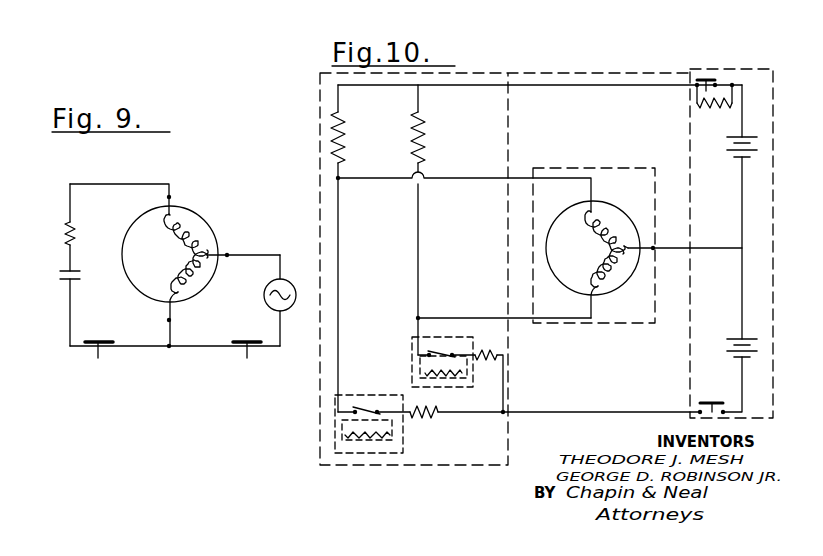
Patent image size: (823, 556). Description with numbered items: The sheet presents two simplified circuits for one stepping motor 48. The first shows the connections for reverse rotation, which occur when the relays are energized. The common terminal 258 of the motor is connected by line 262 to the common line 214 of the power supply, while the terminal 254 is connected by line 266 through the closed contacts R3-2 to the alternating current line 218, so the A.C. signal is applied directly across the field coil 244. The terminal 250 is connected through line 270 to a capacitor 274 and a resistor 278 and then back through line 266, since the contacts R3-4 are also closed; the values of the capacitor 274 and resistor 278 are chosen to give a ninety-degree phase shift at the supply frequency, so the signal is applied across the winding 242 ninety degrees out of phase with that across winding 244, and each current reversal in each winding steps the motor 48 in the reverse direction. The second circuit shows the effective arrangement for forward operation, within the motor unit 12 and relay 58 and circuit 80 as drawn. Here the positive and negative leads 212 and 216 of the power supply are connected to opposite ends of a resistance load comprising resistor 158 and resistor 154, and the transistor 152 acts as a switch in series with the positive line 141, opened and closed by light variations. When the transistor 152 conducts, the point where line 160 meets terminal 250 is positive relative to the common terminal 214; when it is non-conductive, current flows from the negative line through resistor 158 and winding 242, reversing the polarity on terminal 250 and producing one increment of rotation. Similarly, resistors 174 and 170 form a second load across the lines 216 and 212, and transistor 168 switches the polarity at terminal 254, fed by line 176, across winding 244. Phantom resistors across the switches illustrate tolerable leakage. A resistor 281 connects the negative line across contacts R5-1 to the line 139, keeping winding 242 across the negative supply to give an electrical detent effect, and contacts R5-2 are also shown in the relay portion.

In FIG. 10, the motor unit 12 is at (587, 166).
In FIG. 9, the stepping motor 48 is at (133, 285).
In FIG. 10, the stepping motor 48 is at (626, 214).
In FIG. 10, the relay 58 is at (689, 69).
In FIG. 10, the control circuit 80 is at (508, 73).
In FIG. 10, the line 139 is at (467, 73).
In FIG. 10, the positive line 141 is at (528, 413).
In FIG. 10, the transistor 152 is at (375, 402).
In FIG. 10, the resistor 154 is at (438, 416).
In FIG. 10, the resistor 158 is at (347, 121).
In FIG. 10, the line 160 is at (515, 178).
In FIG. 10, the transistor 168 is at (444, 341).
In FIG. 10, the resistor 170 is at (490, 349).
In FIG. 10, the resistor 174 is at (425, 141).
In FIG. 10, the line 176 is at (523, 319).
In FIG. 10, the positive lead 212 is at (732, 407).
In FIG. 9, the common line 214 is at (258, 255).
In FIG. 10, the common line 214 is at (699, 248).
In FIG. 10, the negative lead 216 is at (723, 84).
In FIG. 9, the alternating current line 218 is at (280, 323).
In FIG. 9, the winding 242 is at (196, 227).
In FIG. 10, the winding 242 is at (618, 232).
In FIG. 9, the winding 244 is at (205, 278).
In FIG. 10, the winding 244 is at (609, 288).
In FIG. 9, the terminal 250 is at (169, 197).
In FIG. 10, the terminal 250 is at (592, 182).
In FIG. 9, the terminal 254 is at (172, 320).
In FIG. 10, the terminal 254 is at (597, 323).
In FIG. 9, the common terminal 258 is at (227, 255).
In FIG. 10, the line 262 is at (653, 247).
In FIG. 9, the line 266 is at (190, 347).
In FIG. 9, the line 270 is at (130, 184).
In FIG. 9, the capacitor 274 is at (74, 270).
In FIG. 9, the resistor 278 is at (74, 228).
In FIG. 10, the resistor 281 is at (733, 108).
In FIG. 9, the contacts R3-2 is at (249, 357).
In FIG. 9, the contacts R3-4 is at (100, 357).
In FIG. 10, the contacts R5-1 is at (705, 78).
In FIG. 10, the relay contact R5-2 is at (709, 400).